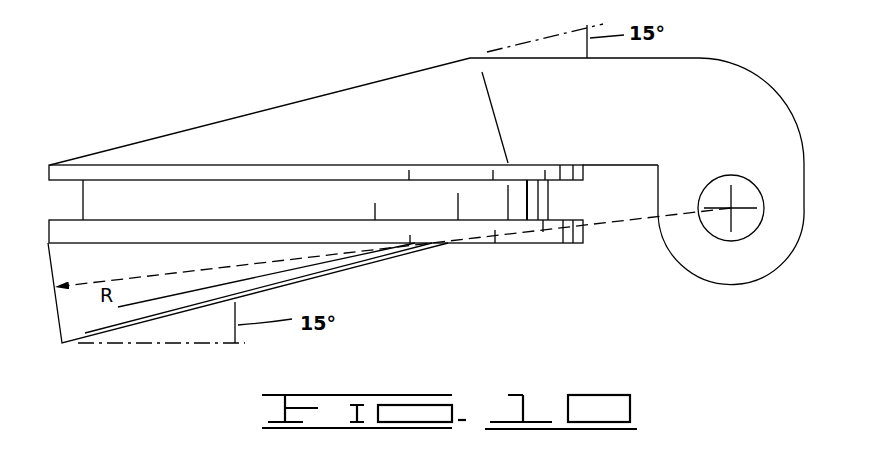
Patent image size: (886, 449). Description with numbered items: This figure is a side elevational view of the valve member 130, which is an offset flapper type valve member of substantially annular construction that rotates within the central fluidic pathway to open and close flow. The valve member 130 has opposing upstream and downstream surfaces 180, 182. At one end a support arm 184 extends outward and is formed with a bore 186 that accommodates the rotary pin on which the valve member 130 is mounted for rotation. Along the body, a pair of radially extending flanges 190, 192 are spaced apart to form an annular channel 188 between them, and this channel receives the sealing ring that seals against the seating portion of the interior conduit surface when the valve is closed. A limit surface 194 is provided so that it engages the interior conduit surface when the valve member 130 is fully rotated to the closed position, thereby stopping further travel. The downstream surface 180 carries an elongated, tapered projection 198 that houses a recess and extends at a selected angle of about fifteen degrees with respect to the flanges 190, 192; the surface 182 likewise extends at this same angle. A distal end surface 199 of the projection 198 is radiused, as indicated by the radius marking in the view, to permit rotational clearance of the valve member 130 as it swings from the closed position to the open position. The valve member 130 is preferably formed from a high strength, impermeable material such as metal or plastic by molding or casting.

The valve member 130 is at (180, 87).
The downstream surface 180 is at (470, 243).
The upstream surface 182 is at (322, 94).
The support arm 184 is at (669, 70).
The bore 186 is at (752, 218).
The annular channel 188 is at (197, 197).
The radially extending flange 190 is at (532, 237).
The radially extending flange 192 is at (135, 173).
The limit surface 194 is at (631, 165).
The tapered projection 198 is at (330, 265).
The distal end surface 199 is at (57, 317).